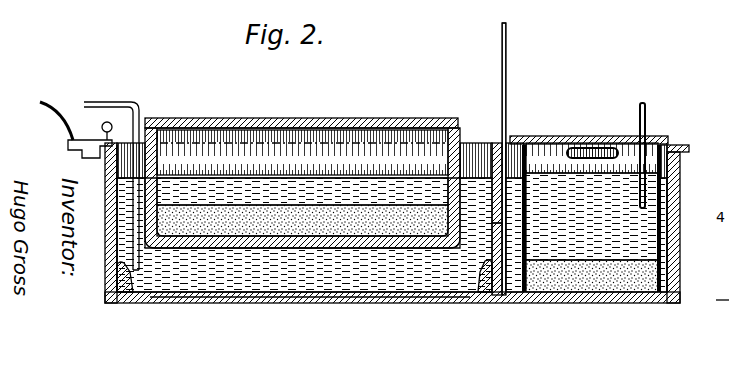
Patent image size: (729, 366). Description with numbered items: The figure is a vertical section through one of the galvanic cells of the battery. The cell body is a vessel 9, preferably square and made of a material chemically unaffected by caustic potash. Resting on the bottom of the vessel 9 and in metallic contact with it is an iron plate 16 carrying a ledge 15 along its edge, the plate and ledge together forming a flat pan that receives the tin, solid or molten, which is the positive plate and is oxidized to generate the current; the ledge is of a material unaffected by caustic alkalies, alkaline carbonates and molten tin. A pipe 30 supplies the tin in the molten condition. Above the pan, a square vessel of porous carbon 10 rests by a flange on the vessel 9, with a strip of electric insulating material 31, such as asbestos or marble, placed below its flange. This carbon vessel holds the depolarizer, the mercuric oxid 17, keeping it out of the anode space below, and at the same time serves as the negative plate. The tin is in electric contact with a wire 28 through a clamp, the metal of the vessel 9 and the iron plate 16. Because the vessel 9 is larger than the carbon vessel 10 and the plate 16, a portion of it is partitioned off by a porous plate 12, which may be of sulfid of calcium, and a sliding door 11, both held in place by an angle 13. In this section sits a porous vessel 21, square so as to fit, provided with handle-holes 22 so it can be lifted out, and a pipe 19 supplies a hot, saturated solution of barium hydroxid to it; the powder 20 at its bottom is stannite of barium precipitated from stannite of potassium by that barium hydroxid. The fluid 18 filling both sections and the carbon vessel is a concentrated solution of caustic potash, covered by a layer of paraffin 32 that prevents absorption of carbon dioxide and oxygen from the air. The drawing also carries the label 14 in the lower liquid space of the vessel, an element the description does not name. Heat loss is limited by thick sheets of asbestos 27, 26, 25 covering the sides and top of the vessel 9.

The vessel 9 is at (683, 173).
The vessel of porous carbon 10 is at (442, 165).
The sliding door 11 is at (506, 68).
The plate 12 is at (477, 165).
The angle 13 is at (505, 300).
The liquid in outer tank 14 is at (292, 284).
The ledge 15 is at (117, 287).
The iron plate 16 is at (205, 303).
The mercuric oxid 17 is at (262, 222).
The fluid 18 is at (216, 190).
The pipe 19 is at (646, 123).
The powder 20 is at (597, 275).
The porous vessel 21 is at (527, 170).
The handle-holes 22 is at (586, 148).
The sheet of asbestos 25 is at (308, 112).
The sheet of asbestos 26 is at (597, 136).
The sheet of asbestos 27 is at (105, 232).
The wire 28 is at (60, 114).
The pipe 30 is at (120, 101).
The strip of electric insulating material 31 is at (146, 130).
The layer of paraffin 32 is at (350, 175).